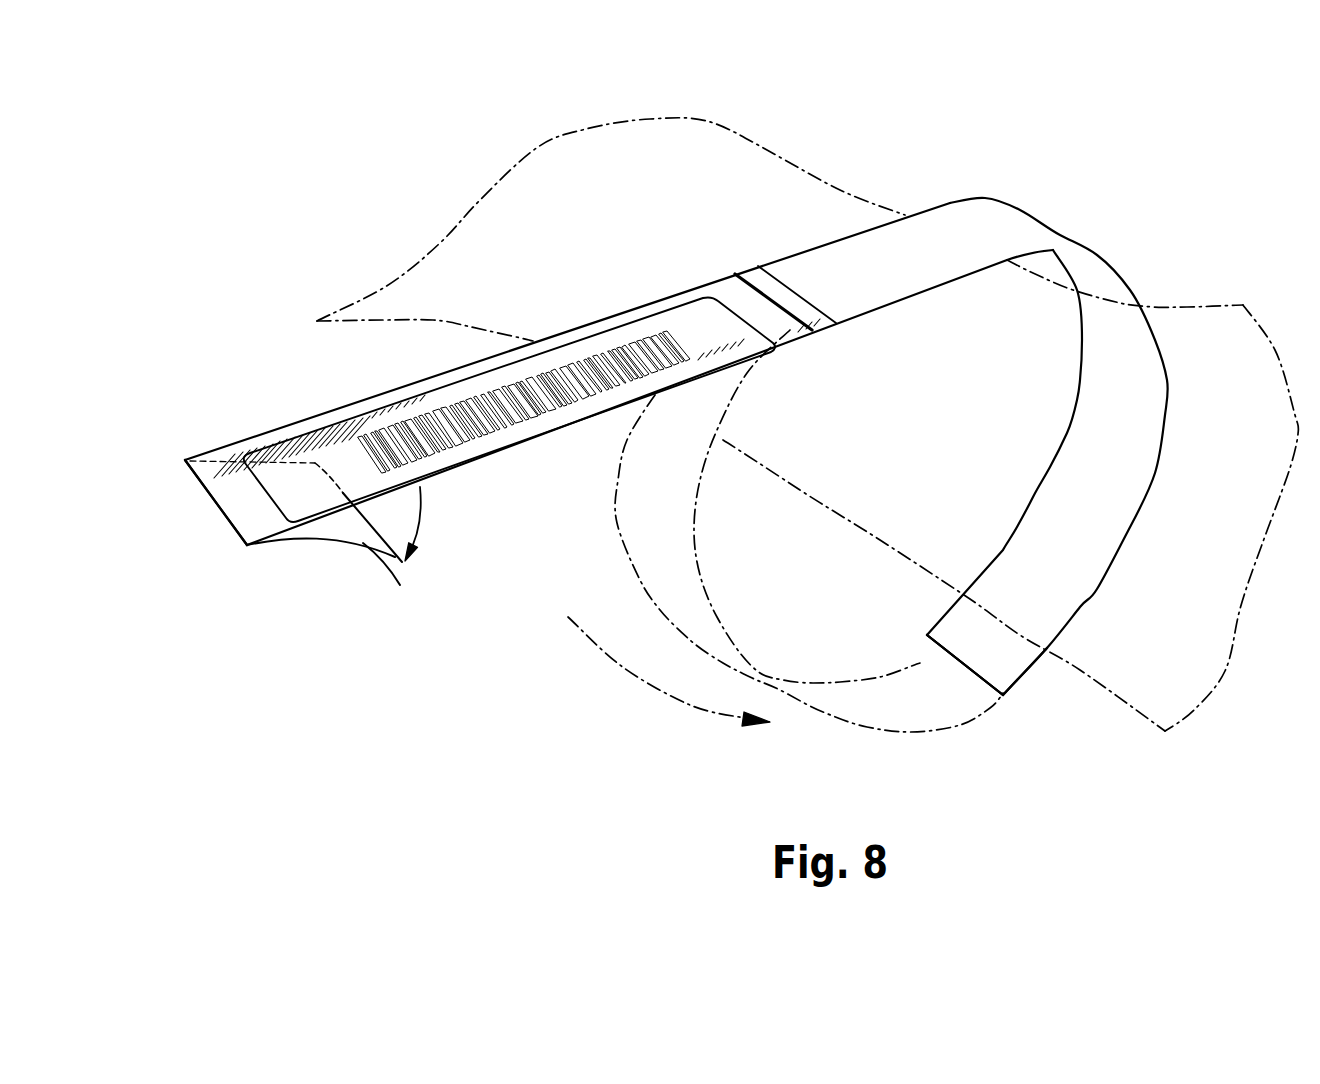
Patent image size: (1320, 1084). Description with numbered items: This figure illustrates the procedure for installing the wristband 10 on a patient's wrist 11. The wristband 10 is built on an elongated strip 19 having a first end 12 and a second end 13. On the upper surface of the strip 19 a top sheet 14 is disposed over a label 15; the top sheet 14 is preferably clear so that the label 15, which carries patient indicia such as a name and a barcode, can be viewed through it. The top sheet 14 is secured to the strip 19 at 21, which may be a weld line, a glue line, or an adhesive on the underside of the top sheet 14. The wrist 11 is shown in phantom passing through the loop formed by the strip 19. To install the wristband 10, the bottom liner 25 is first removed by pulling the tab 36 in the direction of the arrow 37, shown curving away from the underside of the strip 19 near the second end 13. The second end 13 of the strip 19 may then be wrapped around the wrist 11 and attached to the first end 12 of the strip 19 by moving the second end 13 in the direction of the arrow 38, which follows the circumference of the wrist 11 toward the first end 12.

The wristband 10 is at (1135, 212).
The wrist 11 is at (770, 153).
The first end 12 is at (1007, 672).
The second end 13 is at (222, 509).
The top sheet 14 is at (350, 470).
The label 15 is at (553, 328).
The strip 19 is at (830, 238).
The weld line 21 is at (757, 280).
The bottom liner 25 is at (317, 537).
The tab 36 is at (407, 565).
The arrow 37 is at (420, 510).
The arrow 38 is at (647, 690).